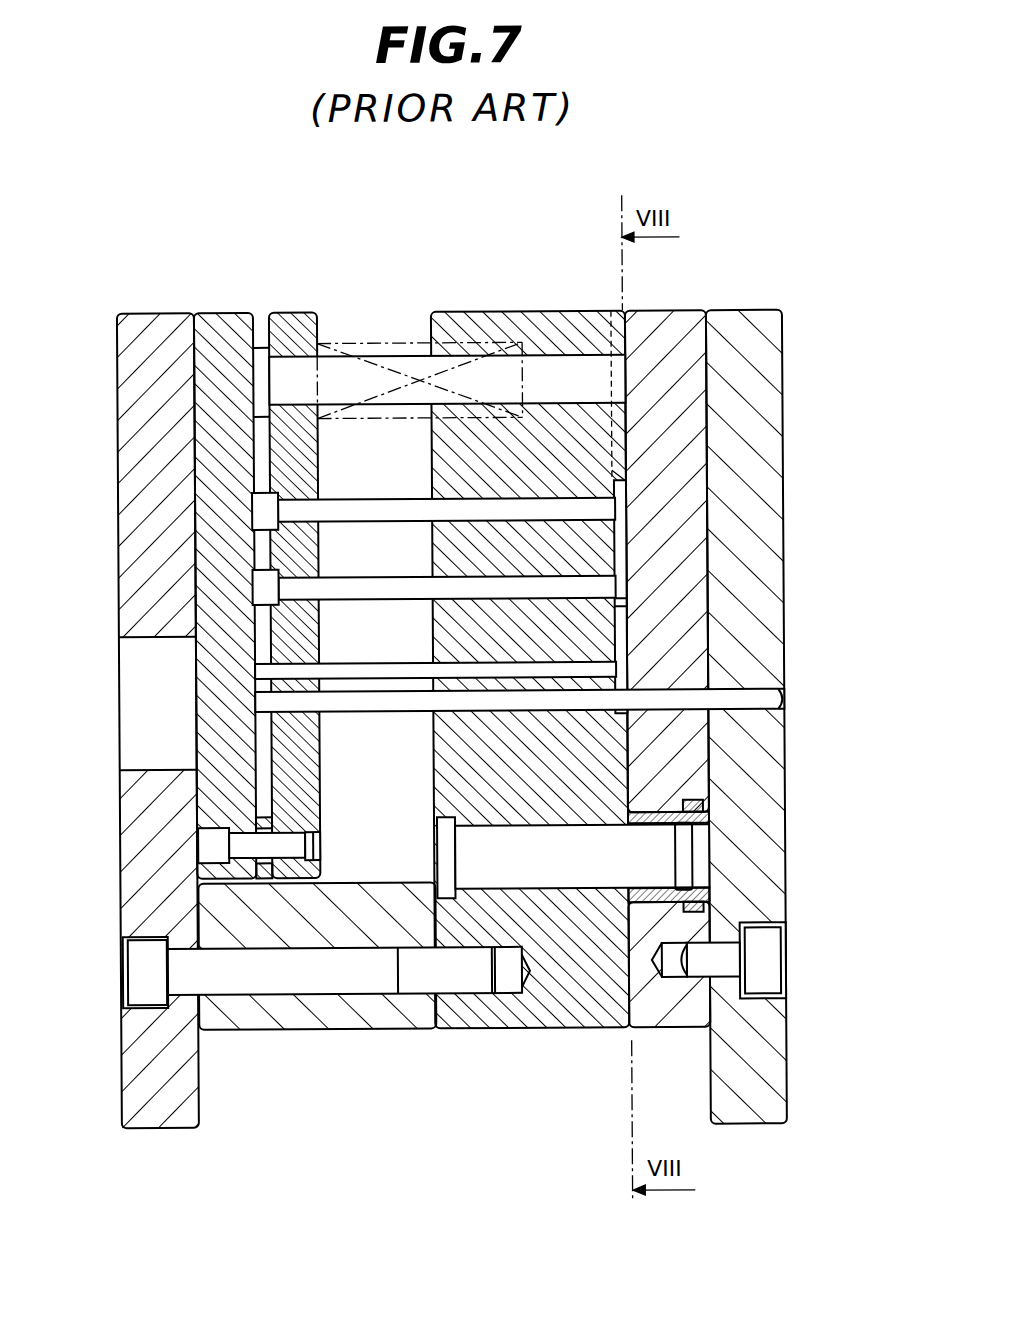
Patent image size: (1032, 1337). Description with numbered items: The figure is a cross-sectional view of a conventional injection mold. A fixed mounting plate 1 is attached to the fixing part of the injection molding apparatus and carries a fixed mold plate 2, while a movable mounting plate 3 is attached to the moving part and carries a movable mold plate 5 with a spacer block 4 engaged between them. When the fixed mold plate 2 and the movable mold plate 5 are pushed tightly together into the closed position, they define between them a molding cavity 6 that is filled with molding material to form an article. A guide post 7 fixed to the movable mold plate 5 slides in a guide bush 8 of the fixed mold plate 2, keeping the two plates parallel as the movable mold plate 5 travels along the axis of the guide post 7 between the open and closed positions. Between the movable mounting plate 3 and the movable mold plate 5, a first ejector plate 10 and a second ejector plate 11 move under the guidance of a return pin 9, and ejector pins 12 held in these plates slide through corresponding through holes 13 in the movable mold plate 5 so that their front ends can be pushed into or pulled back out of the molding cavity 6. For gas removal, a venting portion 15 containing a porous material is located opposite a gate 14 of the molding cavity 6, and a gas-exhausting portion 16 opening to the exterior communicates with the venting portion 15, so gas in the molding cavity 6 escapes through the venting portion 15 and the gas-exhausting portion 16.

The fixed mounting plate 1 is at (760, 360).
The fixed mold plate 2 is at (681, 320).
The movable mounting plate 3 is at (128, 361).
The spacer block 4 is at (298, 1017).
The movable mold plate 5 is at (480, 321).
The molding cavity 6 is at (615, 518).
The guide post 7 is at (650, 871).
The guide bush 8 is at (699, 816).
The return pin 9 is at (355, 379).
The first ejector plate 10 is at (284, 314).
The second ejector plate 11 is at (212, 314).
The ejector pin 12 is at (295, 506).
The through hole 13 is at (555, 553).
The gate 14 is at (613, 608).
The venting portion 15 is at (615, 478).
The gas-exhausting portion 16 is at (604, 328).